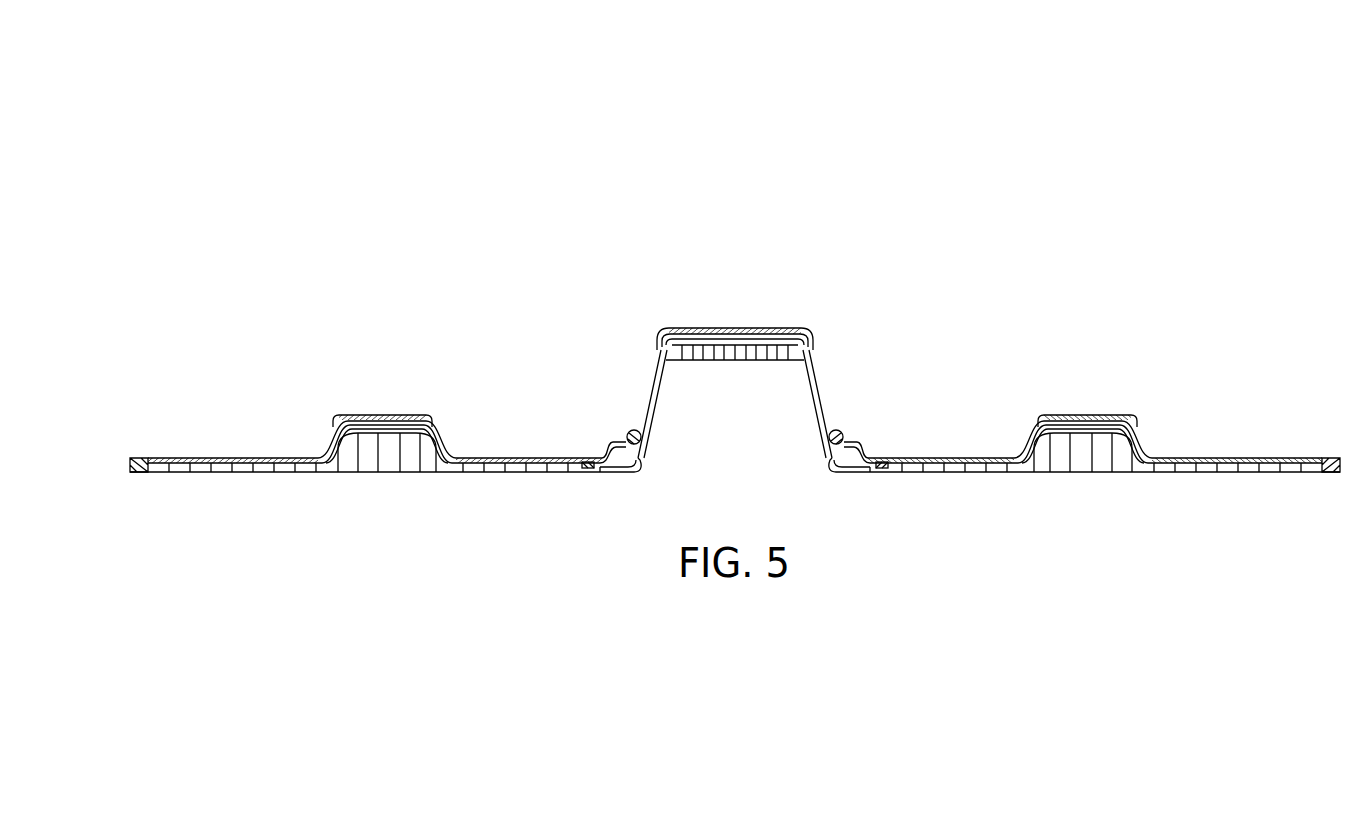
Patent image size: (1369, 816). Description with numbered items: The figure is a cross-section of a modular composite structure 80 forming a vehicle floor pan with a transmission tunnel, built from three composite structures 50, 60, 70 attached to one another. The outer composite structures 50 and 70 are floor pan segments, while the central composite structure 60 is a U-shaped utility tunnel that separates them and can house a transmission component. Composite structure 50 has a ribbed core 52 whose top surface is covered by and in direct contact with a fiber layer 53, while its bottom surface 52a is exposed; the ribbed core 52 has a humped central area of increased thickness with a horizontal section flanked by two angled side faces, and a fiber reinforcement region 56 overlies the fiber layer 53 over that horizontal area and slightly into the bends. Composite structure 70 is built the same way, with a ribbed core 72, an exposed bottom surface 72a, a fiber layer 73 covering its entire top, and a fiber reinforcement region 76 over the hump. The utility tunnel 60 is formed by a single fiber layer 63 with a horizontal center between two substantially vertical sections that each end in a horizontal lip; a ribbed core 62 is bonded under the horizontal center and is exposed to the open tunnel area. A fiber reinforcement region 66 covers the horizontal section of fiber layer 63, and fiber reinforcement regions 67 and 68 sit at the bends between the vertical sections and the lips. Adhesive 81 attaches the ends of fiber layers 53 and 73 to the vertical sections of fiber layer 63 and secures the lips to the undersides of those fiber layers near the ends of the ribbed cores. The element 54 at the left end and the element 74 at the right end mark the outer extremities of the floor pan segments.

The composite structure 50 is at (328, 378).
The ribbed core 52 is at (332, 446).
The bottom surface 52a is at (364, 472).
The fiber layer 53 is at (486, 458).
The first end portion 54 is at (138, 458).
The fiber reinforcement region 56 is at (425, 414).
The composite structure 60 is at (682, 265).
The ribbed core 62 is at (735, 360).
The fiber layer 63 is at (656, 382).
The fiber reinforcement region 66 is at (781, 328).
The fiber reinforcement region 67 is at (642, 466).
The fiber reinforcement region 68 is at (828, 466).
The composite structure 70 is at (1033, 378).
The ribbed core 72 is at (1038, 446).
The bottom surface 72a is at (1059, 472).
The fiber layer 73 is at (1186, 458).
The second end portion 74 is at (1330, 458).
The fiber reinforcement region 76 is at (1130, 414).
The modular composite structure 80 is at (1118, 162).
The adhesive 81 is at (630, 432).